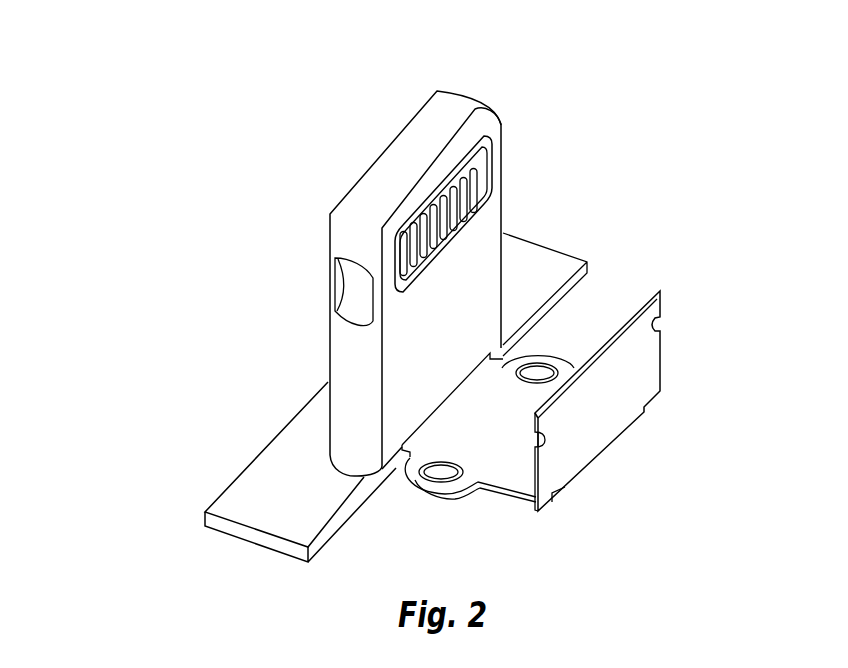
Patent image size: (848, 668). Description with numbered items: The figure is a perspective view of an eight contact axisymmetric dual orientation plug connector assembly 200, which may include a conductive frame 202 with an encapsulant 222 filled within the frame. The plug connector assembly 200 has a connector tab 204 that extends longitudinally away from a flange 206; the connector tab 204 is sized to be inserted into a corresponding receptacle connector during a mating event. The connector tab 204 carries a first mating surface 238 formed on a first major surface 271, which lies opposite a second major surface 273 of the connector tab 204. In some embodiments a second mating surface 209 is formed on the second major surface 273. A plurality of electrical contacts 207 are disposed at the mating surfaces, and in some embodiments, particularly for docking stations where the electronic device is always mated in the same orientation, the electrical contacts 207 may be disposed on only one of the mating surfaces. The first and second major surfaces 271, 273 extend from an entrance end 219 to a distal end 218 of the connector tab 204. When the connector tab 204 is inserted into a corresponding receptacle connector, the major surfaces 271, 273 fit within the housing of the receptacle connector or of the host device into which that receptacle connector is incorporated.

The plug connector assembly 200 is at (131, 121).
The conductive frame 202 is at (355, 428).
The connector tab 204 is at (215, 263).
The flange 206 is at (280, 502).
The electrical contacts 207 is at (448, 206).
The second mating surface 209 is at (304, 174).
The distal end 218 is at (427, 140).
The entrance end 219 is at (408, 509).
The encapsulant 222 is at (442, 246).
The first mating surface 238 is at (488, 150).
The first major surface 271 is at (467, 290).
The second major surface 273 is at (296, 341).